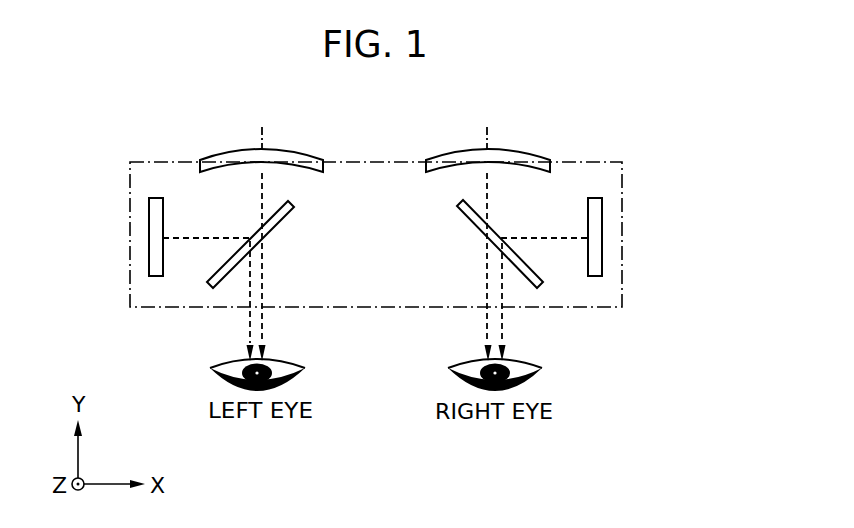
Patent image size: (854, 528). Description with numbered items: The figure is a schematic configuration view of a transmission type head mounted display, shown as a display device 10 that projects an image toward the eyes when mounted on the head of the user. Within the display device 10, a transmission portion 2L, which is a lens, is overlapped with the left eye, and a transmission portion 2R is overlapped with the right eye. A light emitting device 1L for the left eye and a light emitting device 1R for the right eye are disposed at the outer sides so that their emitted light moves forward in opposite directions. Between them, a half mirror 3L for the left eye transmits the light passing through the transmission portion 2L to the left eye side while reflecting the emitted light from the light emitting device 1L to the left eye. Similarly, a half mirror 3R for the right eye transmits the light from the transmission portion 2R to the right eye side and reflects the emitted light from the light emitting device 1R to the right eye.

The display device 10 is at (623, 188).
The light emitting device for the left eye 1L is at (155, 277).
The light emitting device for the right eye 1R is at (595, 277).
The transmission portion (lens) 2L is at (219, 152).
The transmission portion 2R is at (533, 152).
The half mirror (light guiding optical system) for the left eye 3L is at (278, 222).
The half mirror (light guiding optical system) for the right eye 3R is at (472, 222).